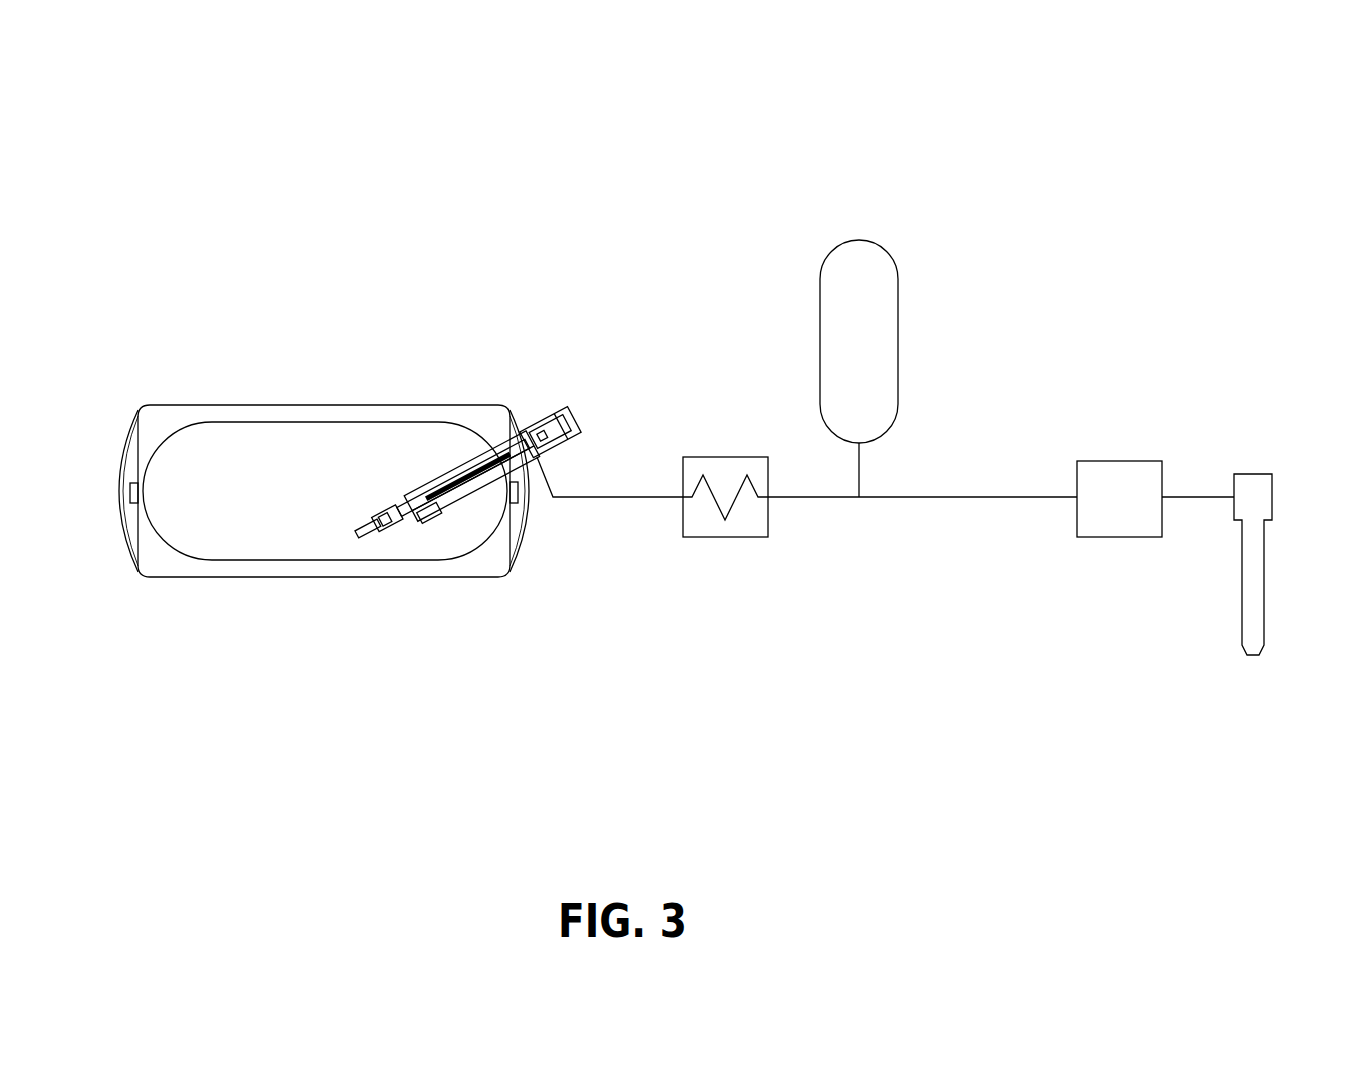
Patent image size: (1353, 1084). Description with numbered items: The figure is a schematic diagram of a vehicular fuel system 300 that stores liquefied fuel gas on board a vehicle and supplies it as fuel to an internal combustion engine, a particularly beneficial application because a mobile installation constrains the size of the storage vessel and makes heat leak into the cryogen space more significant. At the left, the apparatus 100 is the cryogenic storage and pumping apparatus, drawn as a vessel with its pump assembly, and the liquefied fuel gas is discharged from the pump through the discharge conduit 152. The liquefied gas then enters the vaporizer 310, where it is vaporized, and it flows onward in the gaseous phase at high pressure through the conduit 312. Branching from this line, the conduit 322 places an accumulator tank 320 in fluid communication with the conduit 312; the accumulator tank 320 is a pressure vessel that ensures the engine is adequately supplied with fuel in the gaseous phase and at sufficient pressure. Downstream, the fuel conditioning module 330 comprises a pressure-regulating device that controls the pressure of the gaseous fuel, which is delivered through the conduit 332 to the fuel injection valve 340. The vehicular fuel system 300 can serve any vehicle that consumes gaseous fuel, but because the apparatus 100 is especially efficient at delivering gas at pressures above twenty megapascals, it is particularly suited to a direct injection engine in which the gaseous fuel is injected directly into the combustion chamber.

The vehicular fuel system 300 is at (372, 137).
The apparatus 100 is at (272, 355).
The discharge conduit 152 is at (612, 500).
The vaporizer 310 is at (727, 477).
The conduit 312 is at (938, 498).
The accumulator tank 320 is at (855, 357).
The conduit 322 is at (862, 474).
The fuel conditioning module 330 is at (1131, 507).
The conduit 332 is at (1180, 496).
The fuel injection valve 340 is at (1255, 575).